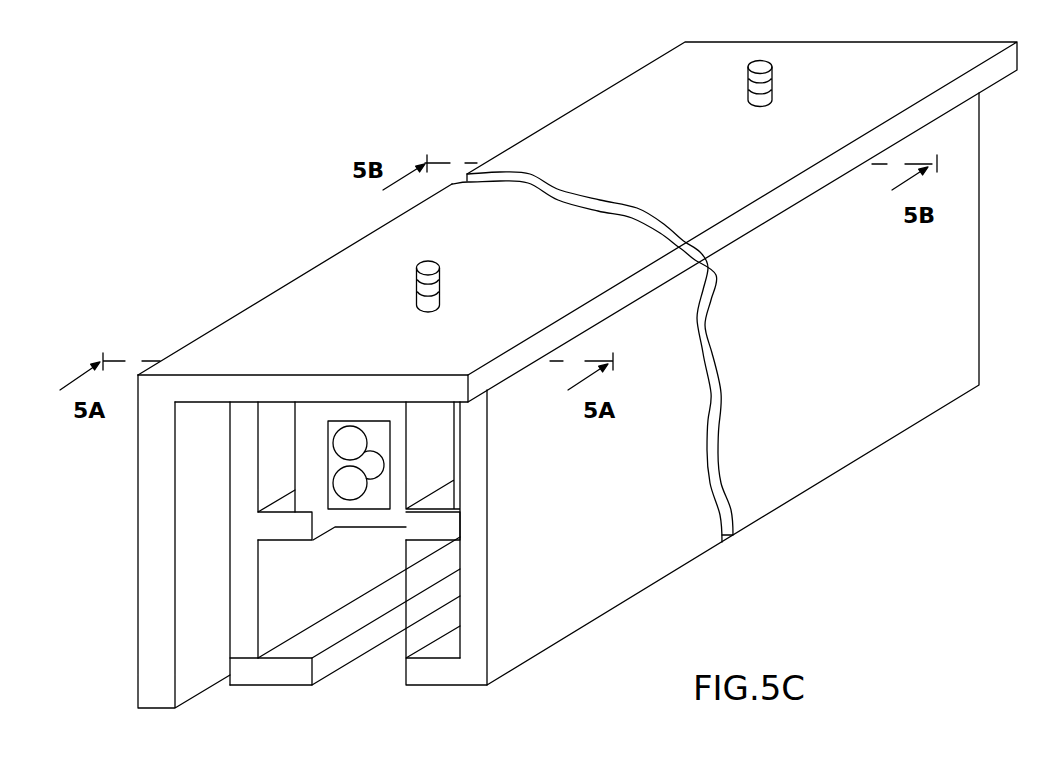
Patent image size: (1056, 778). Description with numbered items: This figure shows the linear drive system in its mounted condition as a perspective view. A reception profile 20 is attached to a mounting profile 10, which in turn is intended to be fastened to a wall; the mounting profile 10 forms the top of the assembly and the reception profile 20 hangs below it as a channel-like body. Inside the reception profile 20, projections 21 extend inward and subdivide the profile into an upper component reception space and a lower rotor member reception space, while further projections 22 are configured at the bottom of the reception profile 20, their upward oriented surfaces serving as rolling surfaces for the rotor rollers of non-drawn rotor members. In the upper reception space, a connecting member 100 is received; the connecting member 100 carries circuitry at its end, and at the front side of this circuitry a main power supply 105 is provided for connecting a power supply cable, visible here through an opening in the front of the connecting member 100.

The mounting profile 10 is at (302, 373).
The reception profile 20 is at (488, 402).
The projections 21 is at (257, 527).
The projections 22 is at (277, 680).
The connecting member 100 is at (295, 470).
The main power supply 105 is at (358, 438).